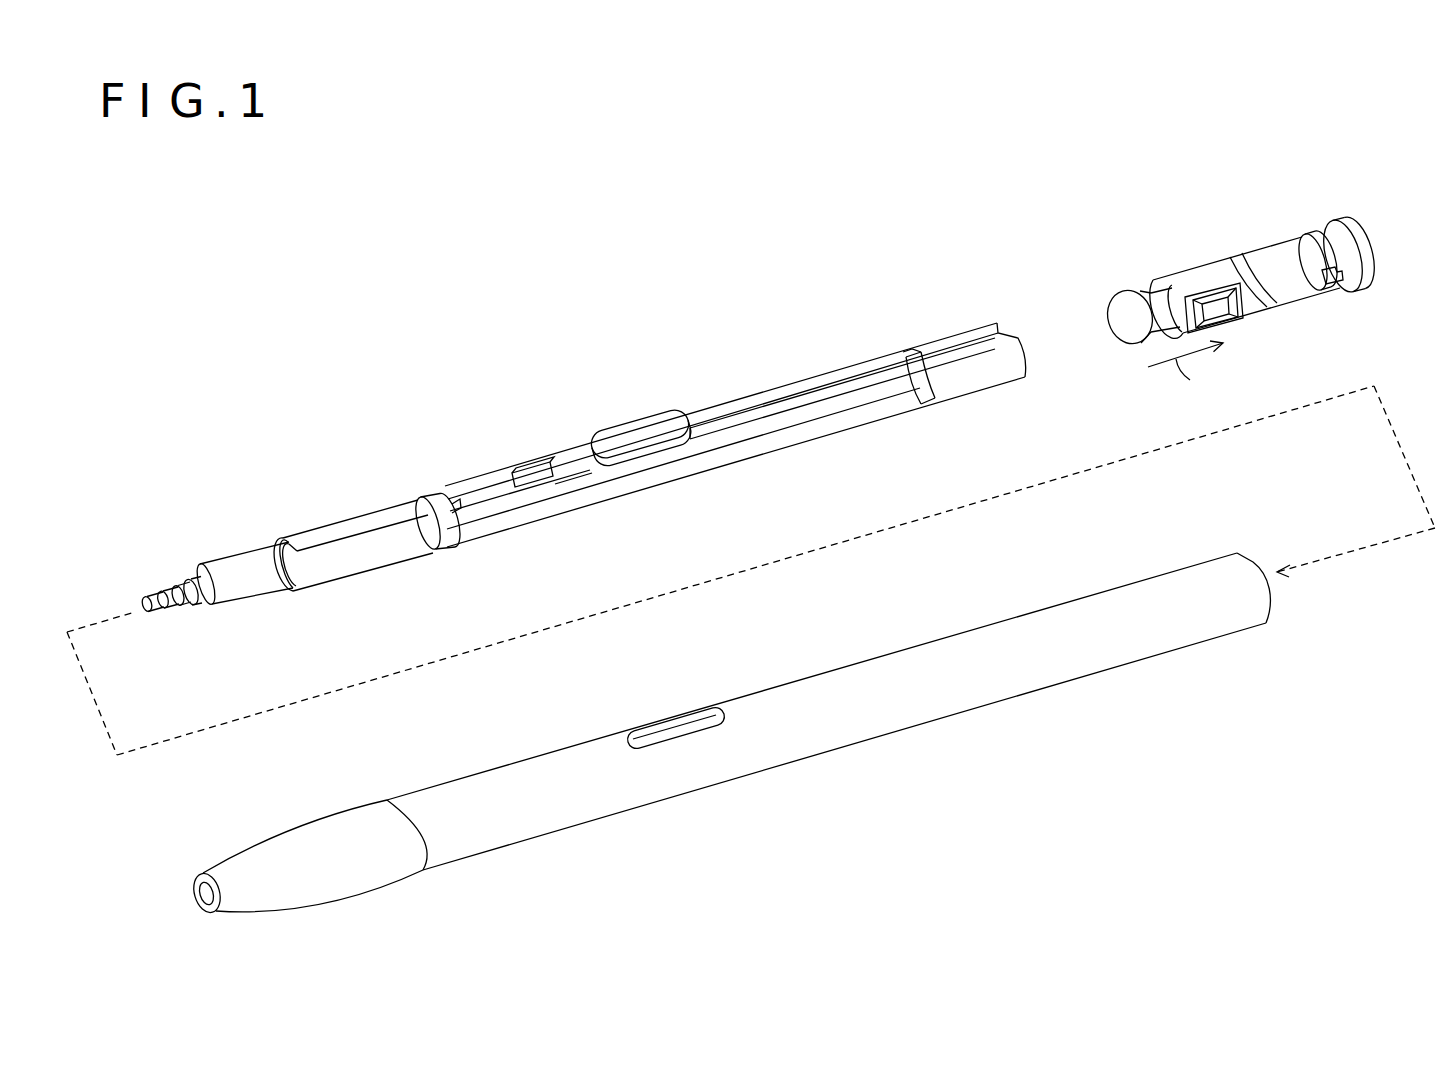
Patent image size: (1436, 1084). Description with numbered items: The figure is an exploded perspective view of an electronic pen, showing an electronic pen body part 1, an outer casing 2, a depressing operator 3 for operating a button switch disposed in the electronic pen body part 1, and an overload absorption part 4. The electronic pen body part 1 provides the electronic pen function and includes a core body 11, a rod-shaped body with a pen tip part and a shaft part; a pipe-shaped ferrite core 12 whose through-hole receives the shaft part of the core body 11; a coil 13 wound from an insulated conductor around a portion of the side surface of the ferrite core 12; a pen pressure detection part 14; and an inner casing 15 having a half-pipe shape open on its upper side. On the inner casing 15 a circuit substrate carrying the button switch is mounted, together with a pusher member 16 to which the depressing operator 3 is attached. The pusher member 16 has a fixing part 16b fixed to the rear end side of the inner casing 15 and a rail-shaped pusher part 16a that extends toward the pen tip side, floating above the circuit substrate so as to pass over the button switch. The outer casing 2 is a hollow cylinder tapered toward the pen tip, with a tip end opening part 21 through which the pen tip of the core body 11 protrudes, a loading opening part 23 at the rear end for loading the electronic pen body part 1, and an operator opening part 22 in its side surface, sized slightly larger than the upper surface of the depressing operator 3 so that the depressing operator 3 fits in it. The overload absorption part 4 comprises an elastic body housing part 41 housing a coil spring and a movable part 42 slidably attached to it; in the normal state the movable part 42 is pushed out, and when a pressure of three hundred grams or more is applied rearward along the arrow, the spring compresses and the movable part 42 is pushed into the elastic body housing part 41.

The electronic pen body part 1 is at (606, 512).
The outer casing 2 is at (778, 792).
The depressing operator 3 is at (628, 416).
The overload absorption part 4 is at (1278, 310).
The core body 11 is at (158, 590).
The ferrite core 12 is at (205, 602).
The coil 13 is at (238, 568).
The pen pressure detection part 14 is at (372, 565).
The inner casing 15 is at (538, 472).
The pusher member 16 is at (933, 287).
The pusher part 16a is at (820, 392).
The fixing part 16b is at (920, 373).
The tip end opening part 21 is at (200, 893).
The operator opening part 22 is at (665, 732).
The loading opening part 23 is at (1282, 603).
The elastic body housing part 41 is at (1261, 250).
The movable part 42 is at (1130, 290).